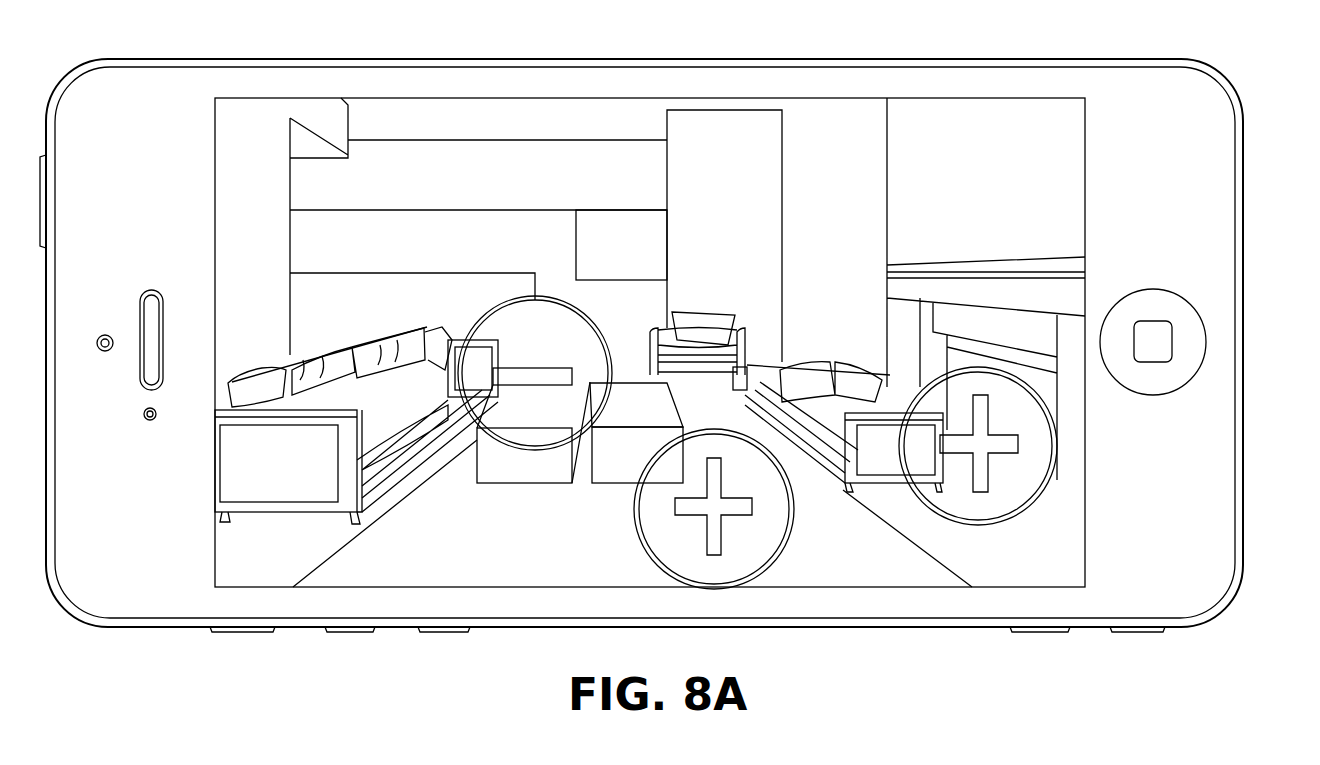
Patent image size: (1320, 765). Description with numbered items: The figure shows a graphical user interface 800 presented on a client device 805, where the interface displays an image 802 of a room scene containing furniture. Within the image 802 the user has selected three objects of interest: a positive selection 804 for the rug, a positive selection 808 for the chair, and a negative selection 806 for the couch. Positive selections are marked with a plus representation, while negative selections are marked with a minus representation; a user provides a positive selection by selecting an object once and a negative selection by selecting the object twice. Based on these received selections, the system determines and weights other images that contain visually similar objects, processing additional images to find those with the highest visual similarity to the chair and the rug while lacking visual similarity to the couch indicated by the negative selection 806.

The graphical user interface 800 is at (1037, 89).
The client device 805 is at (1243, 185).
The image 802 is at (1072, 190).
The positive selection 804 is at (634, 505).
The negative selection 806 is at (478, 318).
The positive selection 808 is at (1057, 445).